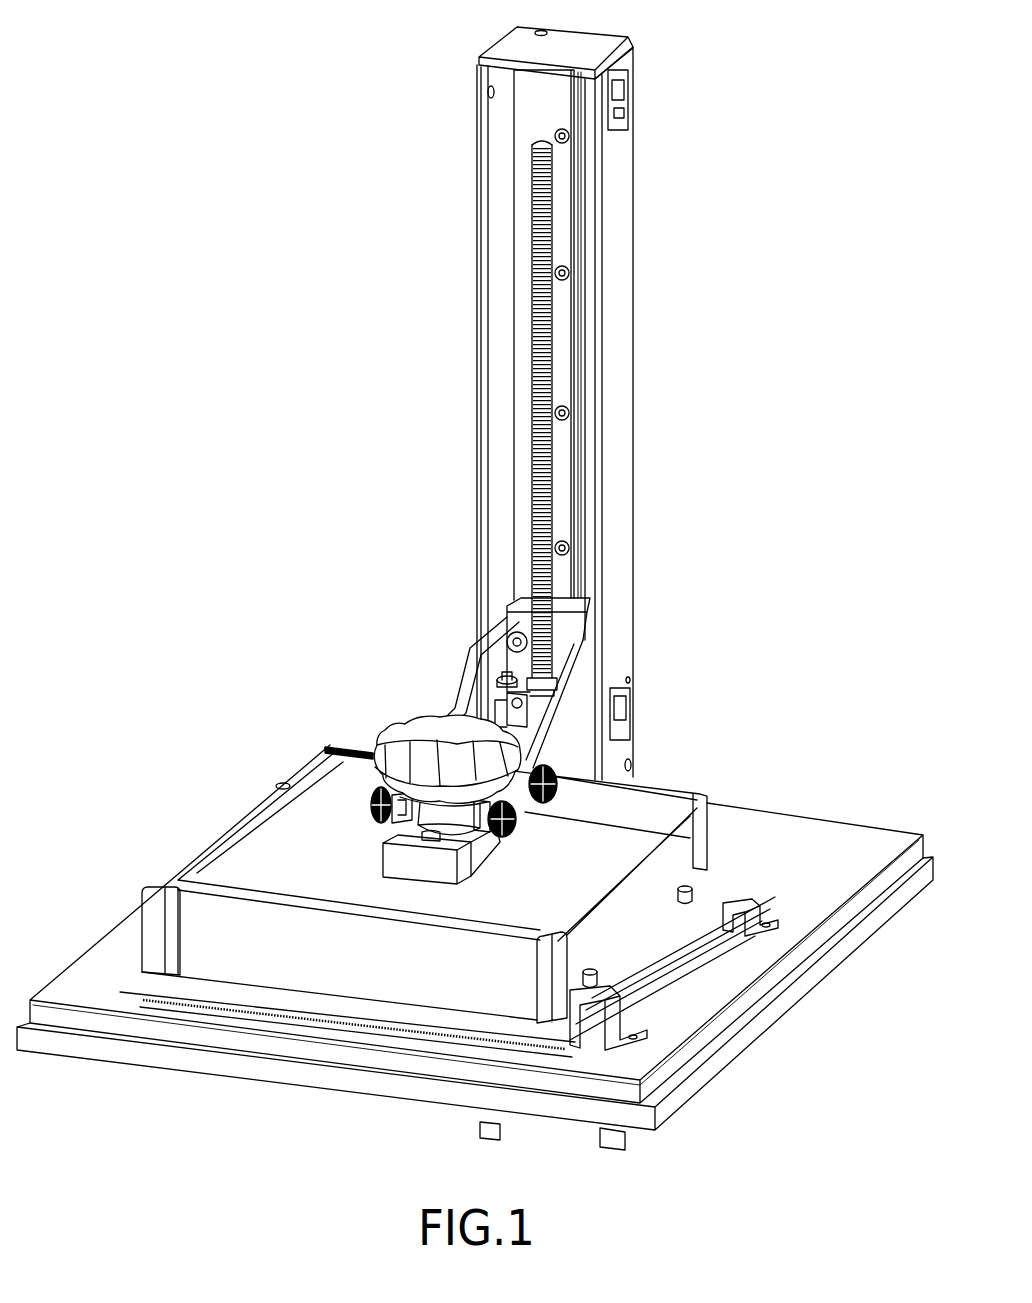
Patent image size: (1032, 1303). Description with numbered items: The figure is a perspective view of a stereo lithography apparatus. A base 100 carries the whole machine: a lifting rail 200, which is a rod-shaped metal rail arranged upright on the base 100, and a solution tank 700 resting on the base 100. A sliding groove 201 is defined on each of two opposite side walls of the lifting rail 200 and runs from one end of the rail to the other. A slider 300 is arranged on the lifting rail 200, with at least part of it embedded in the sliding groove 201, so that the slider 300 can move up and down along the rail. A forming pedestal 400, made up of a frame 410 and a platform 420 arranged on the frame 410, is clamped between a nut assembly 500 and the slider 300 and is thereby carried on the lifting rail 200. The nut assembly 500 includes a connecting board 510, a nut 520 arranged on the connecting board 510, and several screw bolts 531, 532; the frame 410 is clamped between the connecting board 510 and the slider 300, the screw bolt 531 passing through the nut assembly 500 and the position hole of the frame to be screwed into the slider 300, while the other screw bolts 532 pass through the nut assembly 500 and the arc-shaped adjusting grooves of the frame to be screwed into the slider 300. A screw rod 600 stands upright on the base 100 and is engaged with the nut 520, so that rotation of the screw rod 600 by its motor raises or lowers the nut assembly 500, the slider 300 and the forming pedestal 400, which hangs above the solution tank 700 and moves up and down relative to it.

The base 100 is at (836, 830).
The lifting rail 200 is at (557, 102).
The sliding groove 201 is at (587, 146).
The slider 300 is at (528, 595).
The forming pedestal 400 is at (384, 787).
The frame 410 is at (448, 718).
The platform 420 is at (393, 857).
The nut assembly 500 is at (446, 674).
The connecting board 510 is at (530, 672).
The nut 520 is at (520, 702).
The screw bolt 531 is at (528, 630).
The screw bolt 532 is at (505, 648).
The screw rod 600 is at (530, 238).
The solution tank 700 is at (695, 836).